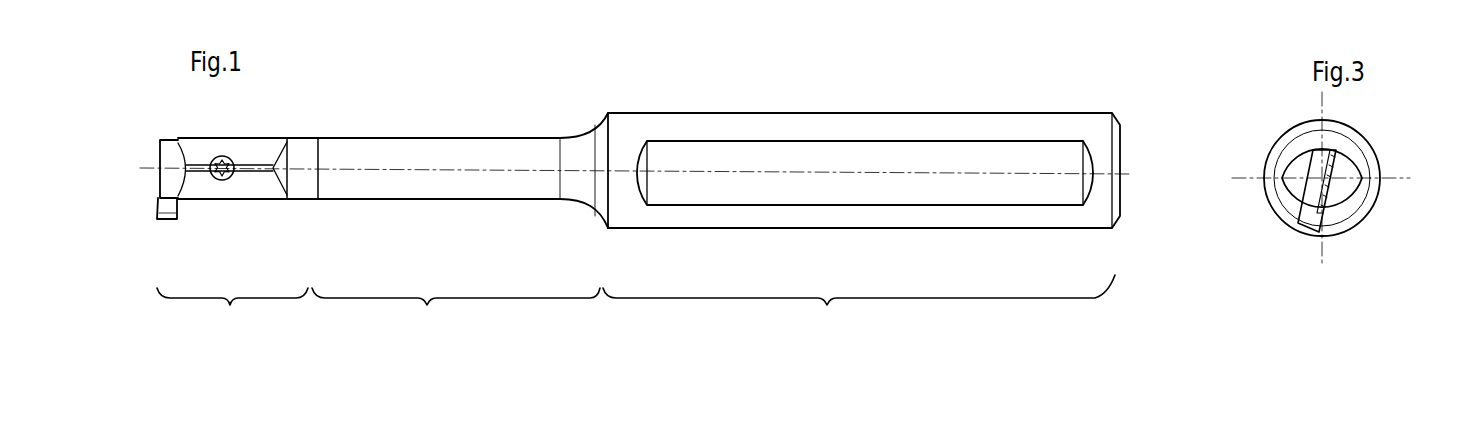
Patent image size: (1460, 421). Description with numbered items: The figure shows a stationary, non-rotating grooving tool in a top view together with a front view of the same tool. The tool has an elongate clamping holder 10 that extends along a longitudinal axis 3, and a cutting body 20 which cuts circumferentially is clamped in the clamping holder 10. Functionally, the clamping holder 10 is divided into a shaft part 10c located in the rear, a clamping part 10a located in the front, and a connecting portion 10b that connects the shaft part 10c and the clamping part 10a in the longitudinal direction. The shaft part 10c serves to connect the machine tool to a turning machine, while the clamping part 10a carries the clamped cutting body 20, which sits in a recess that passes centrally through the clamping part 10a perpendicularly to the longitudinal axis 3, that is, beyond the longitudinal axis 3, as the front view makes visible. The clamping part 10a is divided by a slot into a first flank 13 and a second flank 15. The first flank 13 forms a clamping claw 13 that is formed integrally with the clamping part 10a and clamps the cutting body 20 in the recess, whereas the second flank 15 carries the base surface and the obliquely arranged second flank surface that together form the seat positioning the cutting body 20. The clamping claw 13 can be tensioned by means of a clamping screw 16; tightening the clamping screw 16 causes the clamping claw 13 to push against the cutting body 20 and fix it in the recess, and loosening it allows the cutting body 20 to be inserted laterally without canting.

In FIG. 1, the longitudinal axis 3 is at (978, 173).
In FIG. 3, the longitudinal axis 3 is at (1323, 176).
In FIG. 1, the clamping holder 10 is at (525, 138).
In FIG. 1, the clamping part 10a is at (232, 315).
In FIG. 1, the connecting portion 10b is at (456, 314).
In FIG. 1, the shaft part 10c is at (859, 310).
In FIG. 1, the first flank (clamping claw) 13 is at (257, 153).
In FIG. 3, the first flank (clamping claw) 13 is at (1345, 188).
In FIG. 3, the second flank 15 is at (1298, 168).
In FIG. 1, the clamping screw 16 is at (221, 181).
In FIG. 1, the cutting body 20 is at (168, 180).
In FIG. 3, the cutting body 20 is at (1313, 203).